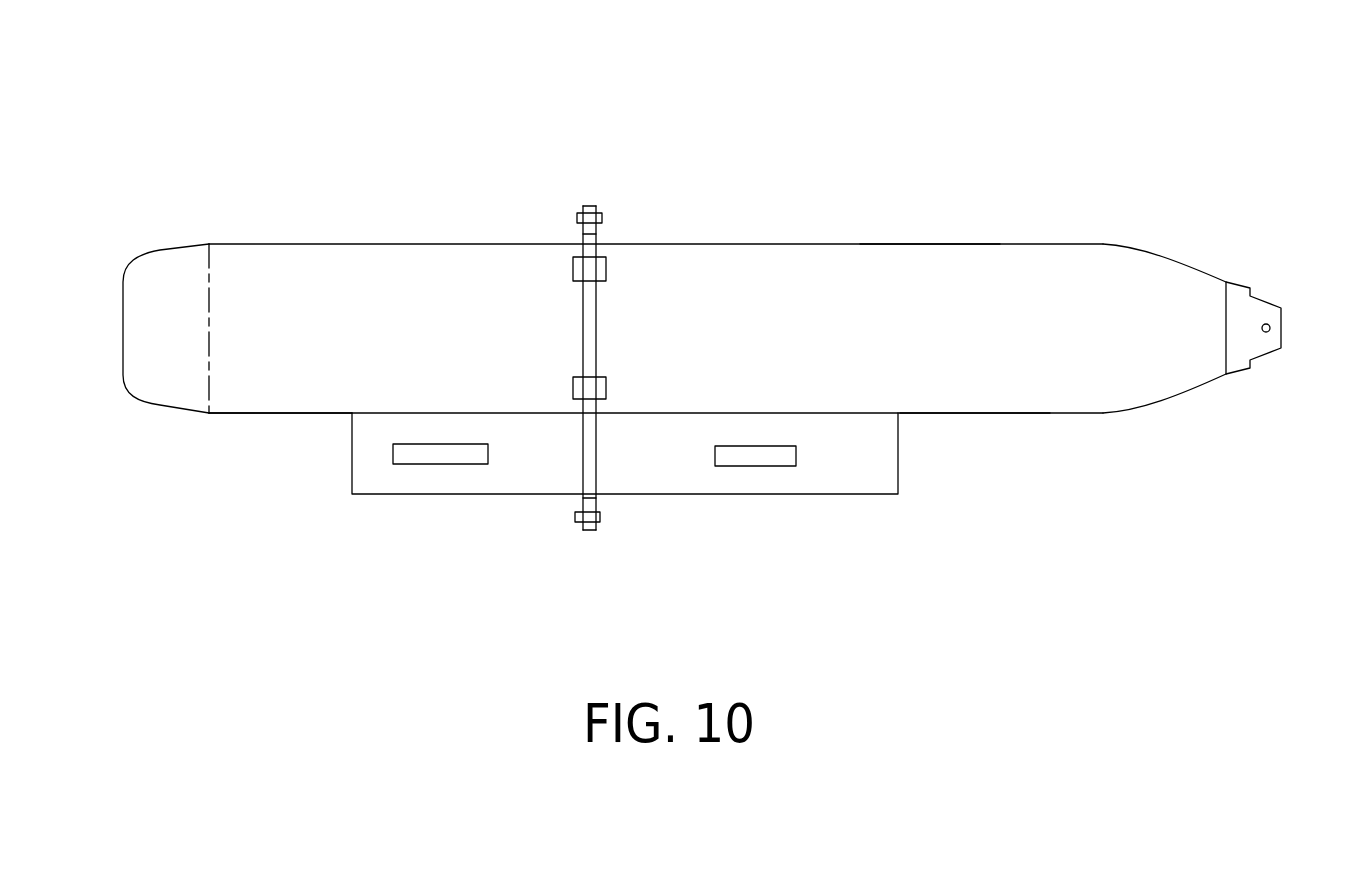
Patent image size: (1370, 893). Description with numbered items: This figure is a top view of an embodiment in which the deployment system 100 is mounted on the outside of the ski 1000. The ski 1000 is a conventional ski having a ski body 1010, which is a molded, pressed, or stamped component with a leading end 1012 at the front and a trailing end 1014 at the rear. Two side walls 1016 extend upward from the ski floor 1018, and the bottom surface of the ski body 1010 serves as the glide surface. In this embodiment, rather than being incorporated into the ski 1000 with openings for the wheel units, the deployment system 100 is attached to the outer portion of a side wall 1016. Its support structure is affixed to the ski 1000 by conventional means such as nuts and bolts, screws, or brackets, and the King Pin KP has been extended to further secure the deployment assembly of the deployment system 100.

The ski 1000 is at (1095, 143).
The ski body 1010 is at (235, 268).
The leading end 1012 is at (1262, 315).
The trailing end 1014 is at (157, 383).
The side walls 1016 is at (898, 244).
The ski floor 1018 is at (285, 393).
The deployment system 100 is at (650, 462).
The King Pin KP is at (585, 242).